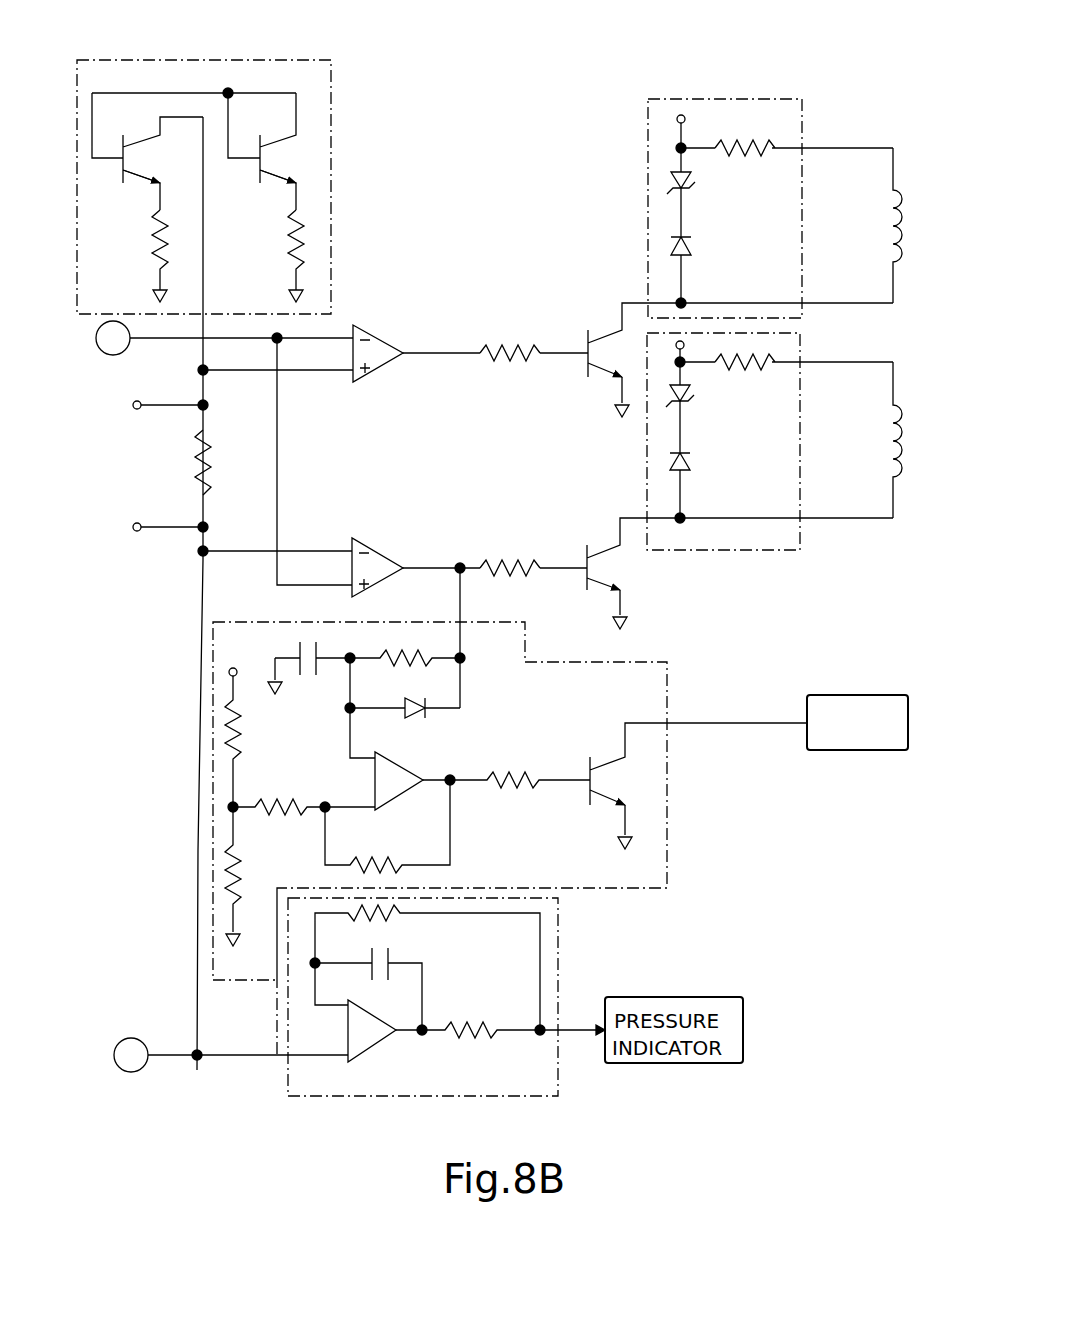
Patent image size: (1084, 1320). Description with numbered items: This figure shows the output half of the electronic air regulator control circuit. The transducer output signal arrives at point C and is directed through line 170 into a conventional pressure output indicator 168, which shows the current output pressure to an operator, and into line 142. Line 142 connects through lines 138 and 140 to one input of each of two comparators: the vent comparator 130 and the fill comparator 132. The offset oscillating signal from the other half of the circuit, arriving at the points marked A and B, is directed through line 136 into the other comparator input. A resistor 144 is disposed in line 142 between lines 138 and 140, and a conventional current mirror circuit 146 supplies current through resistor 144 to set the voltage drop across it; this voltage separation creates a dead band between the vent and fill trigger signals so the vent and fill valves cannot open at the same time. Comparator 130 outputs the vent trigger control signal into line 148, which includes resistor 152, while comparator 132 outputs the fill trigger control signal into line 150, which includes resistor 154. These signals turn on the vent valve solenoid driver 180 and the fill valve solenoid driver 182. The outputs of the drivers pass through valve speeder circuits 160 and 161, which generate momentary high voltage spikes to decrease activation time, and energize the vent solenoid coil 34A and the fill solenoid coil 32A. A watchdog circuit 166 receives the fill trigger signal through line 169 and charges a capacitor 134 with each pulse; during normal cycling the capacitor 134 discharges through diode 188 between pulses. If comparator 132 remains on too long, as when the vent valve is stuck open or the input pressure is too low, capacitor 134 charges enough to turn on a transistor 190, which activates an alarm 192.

The current mirror circuit 146 is at (240, 59).
The vent comparator 130 is at (398, 330).
The fill comparator 132 is at (388, 564).
The capacitor 134 is at (309, 698).
The line 136 is at (277, 455).
The line 138 is at (240, 372).
The line 140 is at (240, 556).
The line 142 is at (197, 858).
The resistor 144 is at (195, 468).
The line 148 is at (442, 350).
The line 150 is at (448, 565).
The resistor 152 is at (523, 362).
The resistor 154 is at (511, 555).
The valve speeder circuit 160 is at (718, 98).
The valve speeder circuit 161 is at (748, 550).
The watchdog circuit 166 is at (488, 838).
The pressure output indicator 168 is at (460, 1098).
The line 169 is at (460, 598).
The line 170 is at (243, 1058).
The solenoid driver 180 is at (603, 315).
The solenoid driver 182 is at (600, 594).
The diode 188 is at (417, 716).
The transistor 190 is at (605, 748).
The alarm 192 is at (858, 742).
The vent valve solenoid coil 34A is at (902, 233).
The fill valve solenoid coil 32A is at (905, 426).
The node A is at (113, 338).
The node B is at (131, 1055).
The point C is at (196, 1072).